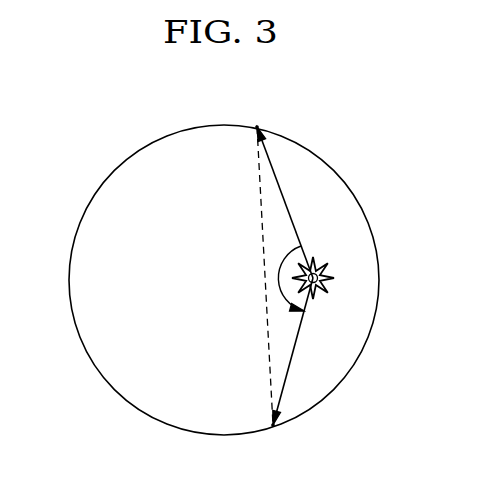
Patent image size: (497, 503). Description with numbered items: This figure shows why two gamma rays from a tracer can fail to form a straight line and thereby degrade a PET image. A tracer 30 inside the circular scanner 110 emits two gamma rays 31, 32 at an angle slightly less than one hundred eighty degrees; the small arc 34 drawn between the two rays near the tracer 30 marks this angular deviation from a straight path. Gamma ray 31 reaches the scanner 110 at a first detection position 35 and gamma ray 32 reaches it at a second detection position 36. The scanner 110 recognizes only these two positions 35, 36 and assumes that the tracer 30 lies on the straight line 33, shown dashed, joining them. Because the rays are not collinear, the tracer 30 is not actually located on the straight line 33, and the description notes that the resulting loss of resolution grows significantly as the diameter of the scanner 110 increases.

The scanner 110 is at (317, 152).
The tracer 30 is at (320, 260).
The gamma ray 31 is at (288, 213).
The gamma ray 32 is at (297, 342).
The straight line 33 is at (258, 214).
The angle arc 34 is at (279, 282).
The first end point 35 is at (260, 124).
The second end point 36 is at (275, 428).